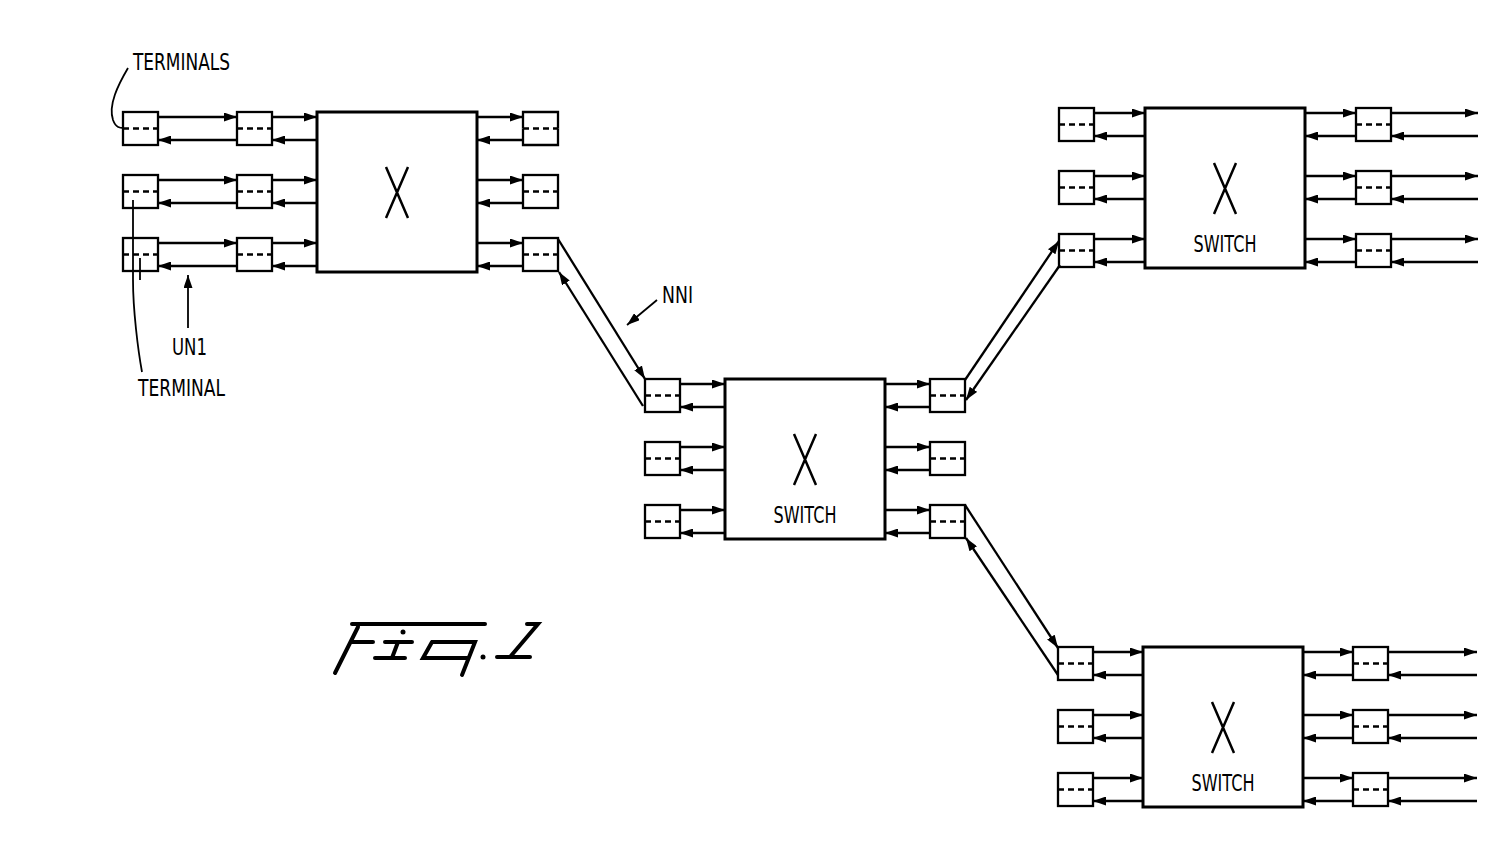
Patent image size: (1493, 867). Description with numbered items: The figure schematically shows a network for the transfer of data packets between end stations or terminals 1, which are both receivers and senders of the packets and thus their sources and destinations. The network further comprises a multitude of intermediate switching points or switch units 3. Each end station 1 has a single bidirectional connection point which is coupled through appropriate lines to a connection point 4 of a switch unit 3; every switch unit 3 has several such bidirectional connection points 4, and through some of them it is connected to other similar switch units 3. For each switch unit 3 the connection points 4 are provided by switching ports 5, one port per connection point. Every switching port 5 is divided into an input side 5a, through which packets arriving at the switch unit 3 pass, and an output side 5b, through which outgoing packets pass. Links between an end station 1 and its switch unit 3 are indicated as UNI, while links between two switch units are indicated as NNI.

The end station 1 is at (147, 121).
The switch unit 3 is at (370, 118).
The connection point 4 is at (293, 192).
The switching port 5 is at (253, 118).
The input side 5a is at (553, 142).
The output side 5b is at (535, 113).